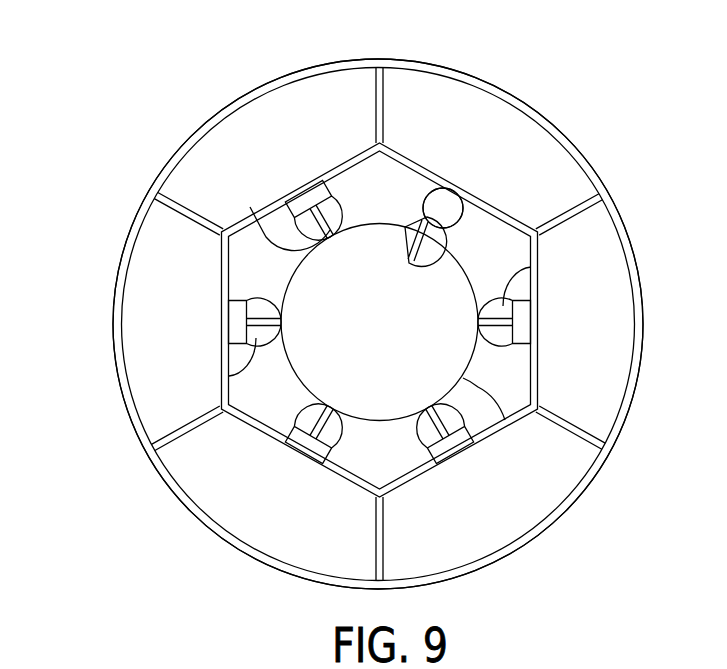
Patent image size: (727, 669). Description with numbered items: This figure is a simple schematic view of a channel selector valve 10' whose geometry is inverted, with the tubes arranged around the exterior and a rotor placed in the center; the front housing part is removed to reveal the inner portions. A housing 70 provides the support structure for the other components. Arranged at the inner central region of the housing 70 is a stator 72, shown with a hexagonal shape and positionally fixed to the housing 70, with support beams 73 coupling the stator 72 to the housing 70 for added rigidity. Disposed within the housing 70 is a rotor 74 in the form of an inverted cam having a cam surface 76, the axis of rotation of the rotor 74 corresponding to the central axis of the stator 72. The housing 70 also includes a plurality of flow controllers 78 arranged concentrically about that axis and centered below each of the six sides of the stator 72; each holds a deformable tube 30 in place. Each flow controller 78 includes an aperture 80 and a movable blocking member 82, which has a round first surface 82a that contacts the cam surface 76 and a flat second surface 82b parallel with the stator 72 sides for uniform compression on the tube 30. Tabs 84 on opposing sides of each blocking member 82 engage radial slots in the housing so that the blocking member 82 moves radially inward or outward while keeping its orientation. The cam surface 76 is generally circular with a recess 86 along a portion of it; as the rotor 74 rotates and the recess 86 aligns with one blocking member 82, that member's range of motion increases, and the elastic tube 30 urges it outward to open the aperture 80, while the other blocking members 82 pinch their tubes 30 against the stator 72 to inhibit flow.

The channel selector valve 10' is at (340, 304).
The housing 70 is at (120, 393).
The stator 72 is at (221, 268).
The support beams 73 is at (567, 433).
The rotor 74 is at (312, 360).
The cam surface 76 is at (505, 420).
The flow controllers 78 is at (317, 166).
The aperture 80 is at (427, 194).
The blocking member 82 is at (531, 267).
The first surface 82a is at (250, 207).
The second surface 82b is at (448, 207).
The tab 84 is at (229, 376).
The recess 86 is at (410, 223).
The tube 30 is at (436, 232).